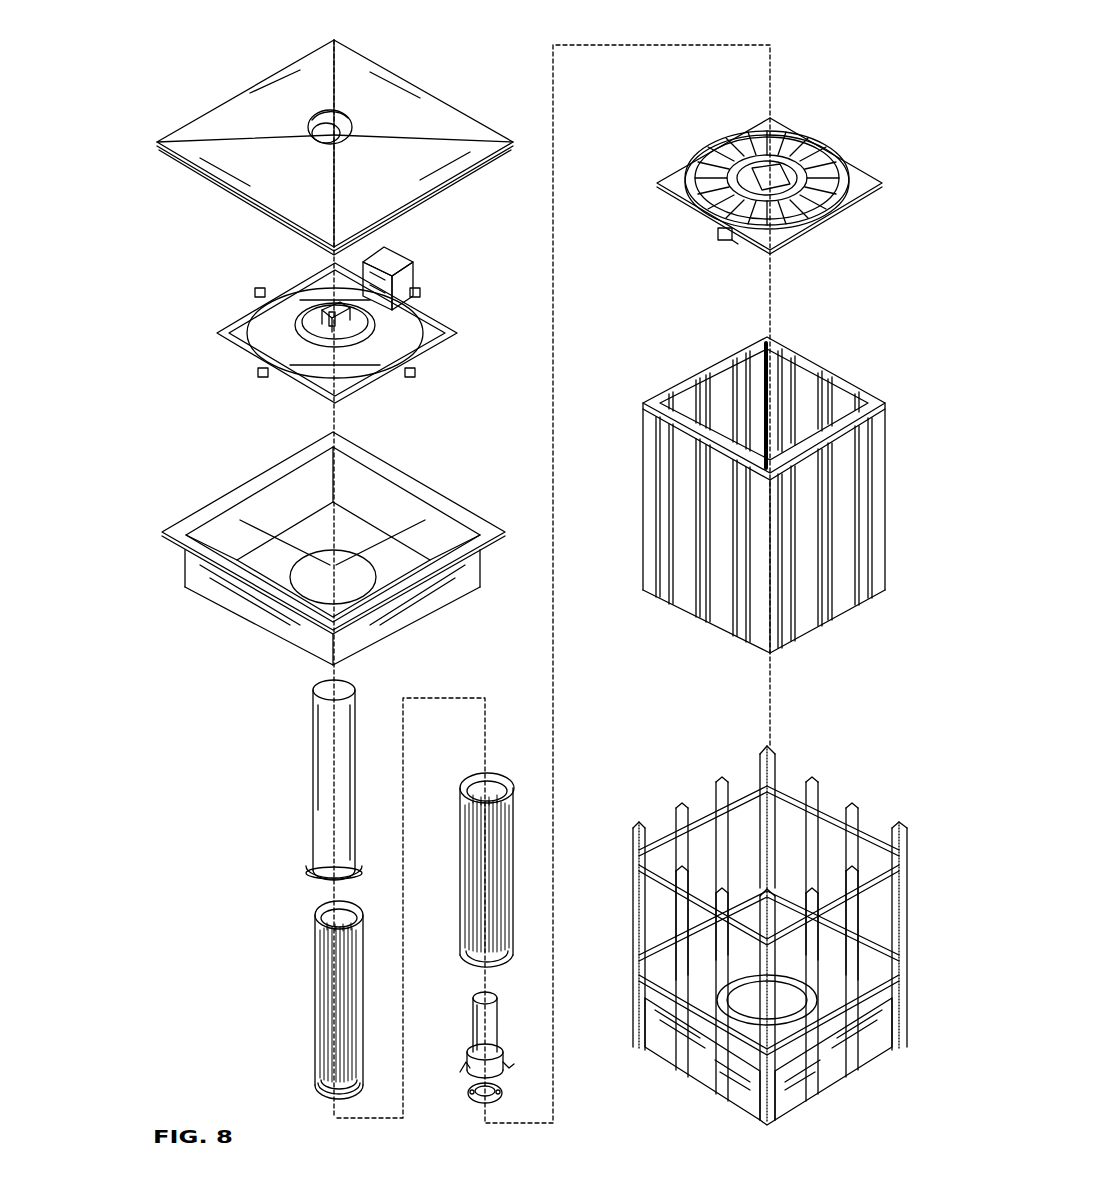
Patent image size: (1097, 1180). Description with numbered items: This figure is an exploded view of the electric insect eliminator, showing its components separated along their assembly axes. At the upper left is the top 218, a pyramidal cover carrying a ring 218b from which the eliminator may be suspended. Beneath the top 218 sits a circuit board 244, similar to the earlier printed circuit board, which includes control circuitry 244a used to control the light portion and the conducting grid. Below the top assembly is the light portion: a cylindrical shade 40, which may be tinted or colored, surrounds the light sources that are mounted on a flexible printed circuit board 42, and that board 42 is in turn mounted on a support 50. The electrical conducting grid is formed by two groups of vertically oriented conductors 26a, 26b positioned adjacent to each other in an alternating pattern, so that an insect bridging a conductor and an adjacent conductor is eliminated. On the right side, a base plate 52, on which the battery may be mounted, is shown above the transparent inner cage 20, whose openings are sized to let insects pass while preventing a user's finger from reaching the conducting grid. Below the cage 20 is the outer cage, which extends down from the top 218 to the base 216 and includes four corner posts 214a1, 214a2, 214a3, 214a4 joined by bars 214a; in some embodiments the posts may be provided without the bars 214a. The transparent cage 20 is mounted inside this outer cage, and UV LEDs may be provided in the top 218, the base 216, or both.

The top 218 is at (279, 339).
The ring 218b is at (327, 112).
The circuit board 244 is at (407, 268).
The control circuitry 244a is at (300, 323).
The cylindrical shade 40 is at (337, 745).
The conductors 26a is at (315, 964).
The conductors 26b is at (473, 780).
The flexible printed circuit board 42 is at (488, 1032).
The support 50 is at (507, 1070).
The base plate 52 is at (830, 157).
The transparent inner cage 20 is at (820, 470).
The bars 214a is at (850, 912).
The post 214a1 is at (639, 828).
The post 214a2 is at (772, 913).
The post 214a3 is at (772, 768).
The post 214a4 is at (900, 824).
The base 216 is at (840, 1057).